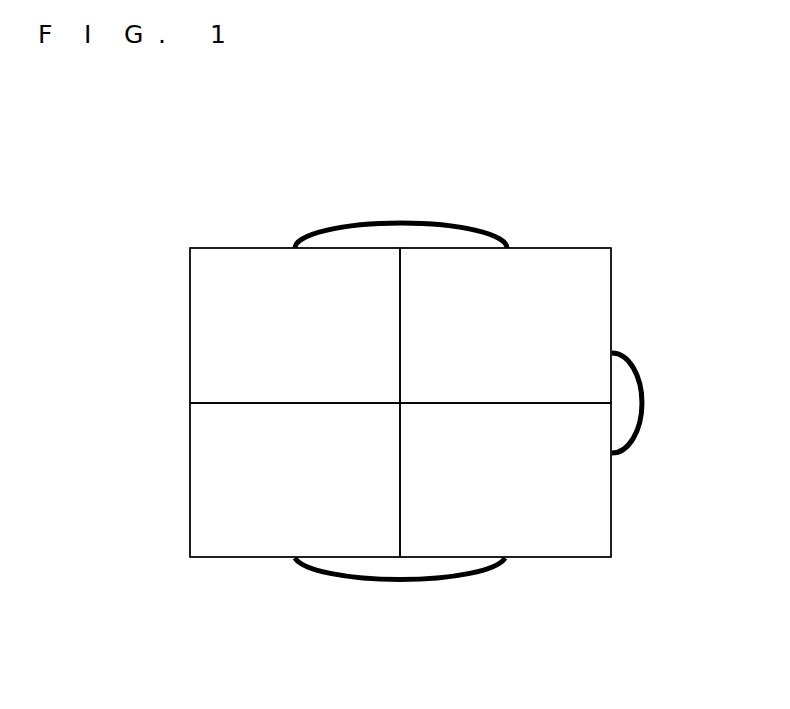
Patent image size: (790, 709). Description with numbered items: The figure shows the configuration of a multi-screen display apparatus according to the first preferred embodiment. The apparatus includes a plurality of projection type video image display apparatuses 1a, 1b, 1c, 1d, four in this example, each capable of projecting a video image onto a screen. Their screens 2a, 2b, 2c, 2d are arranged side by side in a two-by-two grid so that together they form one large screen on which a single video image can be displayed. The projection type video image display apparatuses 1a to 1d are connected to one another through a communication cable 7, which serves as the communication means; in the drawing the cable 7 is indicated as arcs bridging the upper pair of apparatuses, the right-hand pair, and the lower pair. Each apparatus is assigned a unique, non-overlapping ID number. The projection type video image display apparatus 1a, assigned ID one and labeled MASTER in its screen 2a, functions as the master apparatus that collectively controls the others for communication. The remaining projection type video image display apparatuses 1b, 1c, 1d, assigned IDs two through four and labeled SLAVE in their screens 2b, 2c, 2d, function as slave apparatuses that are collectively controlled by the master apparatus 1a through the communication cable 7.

The projection type video image display apparatus 1a is at (260, 325).
The projection type video image display apparatus 1b is at (540, 325).
The projection type video image display apparatus 1c is at (260, 480).
The projection type video image display apparatus 1d is at (539, 480).
The screen 2a is at (190, 323).
The screen 2b is at (612, 298).
The screen 2c is at (190, 480).
The screen 2d is at (612, 497).
The communication cable 7 is at (404, 222).